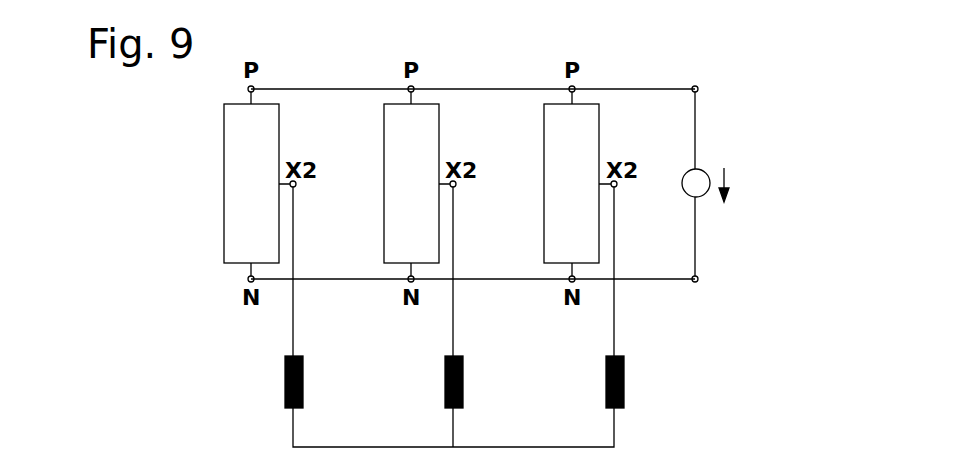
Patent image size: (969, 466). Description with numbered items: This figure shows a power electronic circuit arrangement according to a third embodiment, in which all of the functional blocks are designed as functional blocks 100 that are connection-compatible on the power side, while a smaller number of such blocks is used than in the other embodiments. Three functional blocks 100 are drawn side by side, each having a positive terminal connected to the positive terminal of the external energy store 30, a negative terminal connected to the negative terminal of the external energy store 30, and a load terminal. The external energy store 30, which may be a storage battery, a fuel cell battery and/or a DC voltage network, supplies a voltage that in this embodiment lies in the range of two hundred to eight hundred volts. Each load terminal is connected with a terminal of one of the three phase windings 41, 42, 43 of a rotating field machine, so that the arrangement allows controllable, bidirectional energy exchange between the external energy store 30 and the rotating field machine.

The functional block that is connection-compatible on the power side 100 is at (224, 232).
The external energy store 30 is at (704, 194).
The phase winding 41 is at (312, 382).
The phase winding 42 is at (472, 382).
The phase winding 43 is at (633, 382).